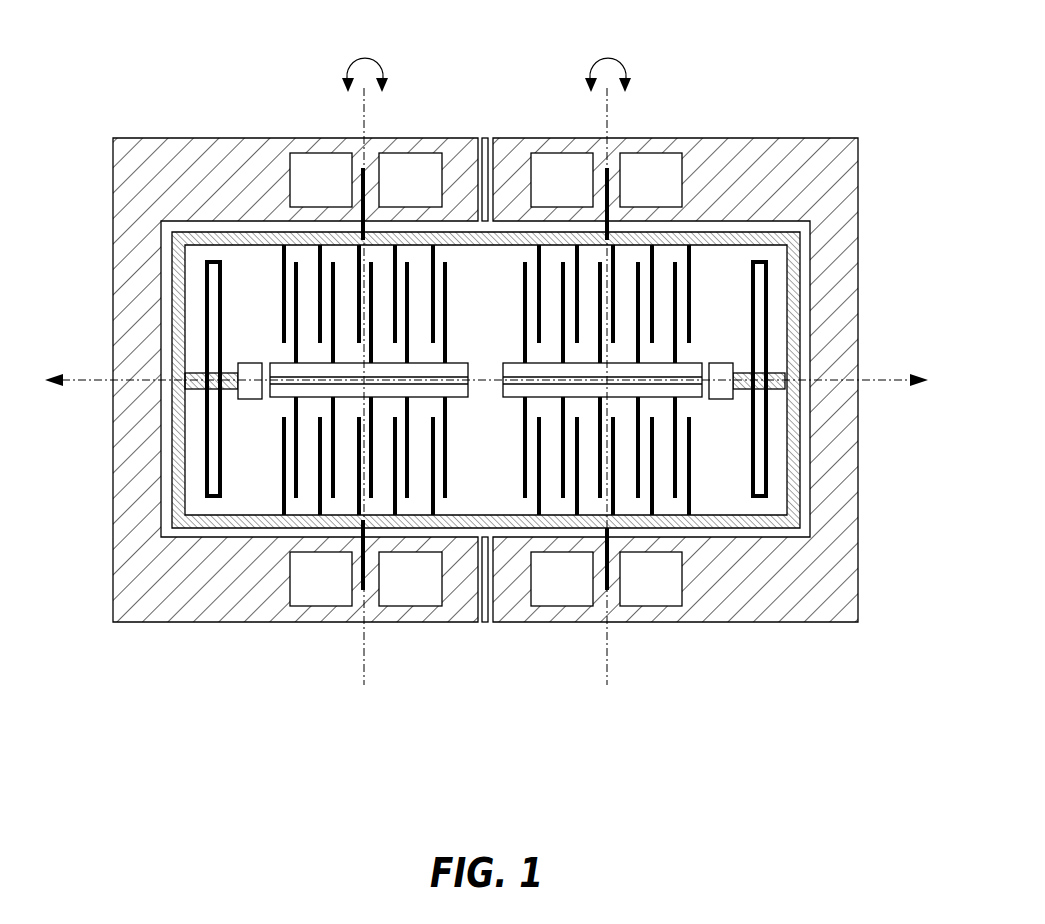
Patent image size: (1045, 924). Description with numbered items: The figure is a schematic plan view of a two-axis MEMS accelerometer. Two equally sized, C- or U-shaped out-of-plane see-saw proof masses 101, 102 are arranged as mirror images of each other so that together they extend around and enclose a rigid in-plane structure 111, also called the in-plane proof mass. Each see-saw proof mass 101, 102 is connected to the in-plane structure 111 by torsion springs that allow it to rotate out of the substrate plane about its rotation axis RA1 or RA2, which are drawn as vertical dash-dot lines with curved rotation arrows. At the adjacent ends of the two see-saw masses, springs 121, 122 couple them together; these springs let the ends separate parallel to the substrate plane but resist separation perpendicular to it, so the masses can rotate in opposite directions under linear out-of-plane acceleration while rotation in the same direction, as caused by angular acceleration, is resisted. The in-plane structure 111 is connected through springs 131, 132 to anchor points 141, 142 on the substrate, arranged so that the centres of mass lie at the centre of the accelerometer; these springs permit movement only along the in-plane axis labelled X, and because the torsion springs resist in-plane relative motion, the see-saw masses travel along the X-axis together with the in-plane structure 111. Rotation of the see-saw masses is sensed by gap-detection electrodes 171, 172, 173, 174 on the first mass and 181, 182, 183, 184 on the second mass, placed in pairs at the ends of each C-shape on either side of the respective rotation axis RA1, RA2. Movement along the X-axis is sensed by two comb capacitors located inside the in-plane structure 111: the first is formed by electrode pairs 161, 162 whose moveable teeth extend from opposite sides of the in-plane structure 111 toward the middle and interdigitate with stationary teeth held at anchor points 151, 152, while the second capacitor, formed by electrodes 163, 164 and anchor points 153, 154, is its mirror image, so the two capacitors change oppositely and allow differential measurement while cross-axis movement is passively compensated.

The see-saw proof mass 101 is at (257, 138).
The see-saw proof mass 102 is at (749, 138).
The in-plane structure 111 is at (813, 258).
The spring 121 is at (485, 138).
The spring 122 is at (484, 622).
The spring 131 is at (203, 438).
The spring 132 is at (812, 458).
The anchor point 141 is at (252, 363).
The anchor point 142 is at (720, 363).
The anchor point 151 is at (494, 378).
The anchor point 152 is at (258, 398).
The anchor point 153 is at (469, 378).
The anchor point 154 is at (722, 398).
The first electrodes 161 is at (366, 163).
The second electrodes 162 is at (354, 600).
The electrodes 163 is at (616, 163).
The electrodes 164 is at (619, 604).
The electrode 171 is at (321, 180).
The electrode 172 is at (410, 180).
The electrode 173 is at (321, 579).
The electrode 174 is at (410, 579).
The electrode 181 is at (562, 180).
The electrode 182 is at (651, 180).
The electrode 183 is at (562, 579).
The electrode 184 is at (651, 579).
The rotation axis RA1 is at (365, 386).
The rotation axis RA2 is at (608, 386).
The X-axis X is at (486, 368).